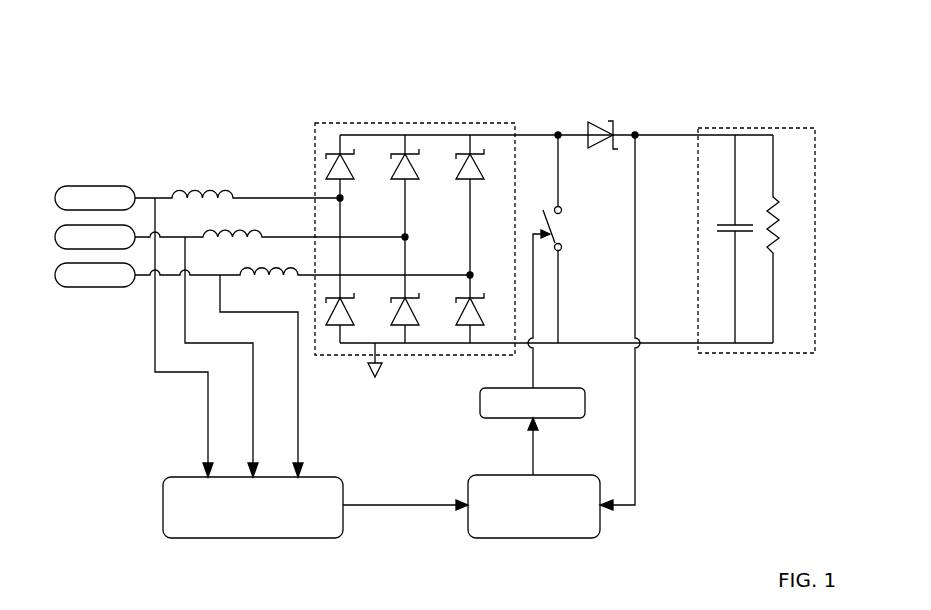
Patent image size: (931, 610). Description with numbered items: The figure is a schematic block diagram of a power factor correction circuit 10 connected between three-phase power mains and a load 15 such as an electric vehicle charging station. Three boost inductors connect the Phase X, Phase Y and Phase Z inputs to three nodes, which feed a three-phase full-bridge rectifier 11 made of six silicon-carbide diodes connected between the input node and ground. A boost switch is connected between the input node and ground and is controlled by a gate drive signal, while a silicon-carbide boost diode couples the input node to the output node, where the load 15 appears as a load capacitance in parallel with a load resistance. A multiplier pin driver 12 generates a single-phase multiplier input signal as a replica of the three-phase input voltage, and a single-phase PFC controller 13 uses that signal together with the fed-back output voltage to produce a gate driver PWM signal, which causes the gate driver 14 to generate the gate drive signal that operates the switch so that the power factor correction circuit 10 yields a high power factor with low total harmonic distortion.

The power factor correction circuit 10 is at (218, 116).
The three-phase full-bridge rectifier 11 is at (322, 122).
The multiplier pin driver 12 is at (207, 540).
The single-phase PFC controller 13 is at (507, 540).
The gate driver 14 is at (497, 420).
The load 15 is at (786, 127).